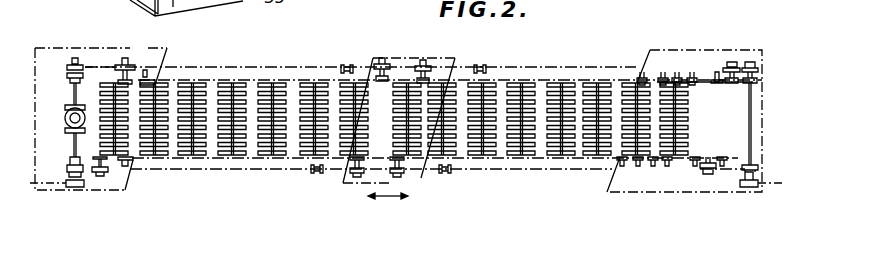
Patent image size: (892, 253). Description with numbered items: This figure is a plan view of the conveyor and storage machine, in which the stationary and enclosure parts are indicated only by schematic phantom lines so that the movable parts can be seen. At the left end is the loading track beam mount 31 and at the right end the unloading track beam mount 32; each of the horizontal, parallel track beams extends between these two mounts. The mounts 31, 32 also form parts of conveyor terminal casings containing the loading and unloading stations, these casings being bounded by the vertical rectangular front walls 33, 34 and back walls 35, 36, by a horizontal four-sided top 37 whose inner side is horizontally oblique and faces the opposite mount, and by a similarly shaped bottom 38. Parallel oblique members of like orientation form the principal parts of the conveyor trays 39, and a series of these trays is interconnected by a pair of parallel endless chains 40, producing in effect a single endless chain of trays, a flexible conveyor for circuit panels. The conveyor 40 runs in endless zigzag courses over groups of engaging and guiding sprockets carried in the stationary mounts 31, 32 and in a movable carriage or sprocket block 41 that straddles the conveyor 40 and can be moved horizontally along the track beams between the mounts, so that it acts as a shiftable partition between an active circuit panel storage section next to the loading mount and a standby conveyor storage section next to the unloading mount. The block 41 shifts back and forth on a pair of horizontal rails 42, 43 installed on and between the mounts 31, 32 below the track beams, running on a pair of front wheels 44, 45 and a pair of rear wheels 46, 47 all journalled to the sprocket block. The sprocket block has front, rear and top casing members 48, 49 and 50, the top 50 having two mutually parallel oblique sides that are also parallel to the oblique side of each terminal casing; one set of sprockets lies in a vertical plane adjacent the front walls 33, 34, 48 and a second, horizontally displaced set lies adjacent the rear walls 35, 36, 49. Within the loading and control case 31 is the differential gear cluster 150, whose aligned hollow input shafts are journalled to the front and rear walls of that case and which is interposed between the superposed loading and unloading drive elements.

The loading track beam mount 31 is at (98, 48).
The unloading track beam mount 32 is at (745, 45).
The front wall 33 is at (105, 192).
The front wall 34 is at (705, 192).
The back wall 35 is at (142, 48).
The back wall 36 is at (705, 50).
The top 37 is at (88, 182).
The bottom 38 is at (702, 66).
The conveyor trays 39 is at (228, 140).
The endless chains 40 is at (540, 80).
The sprocket block 41 is at (345, 186).
The horizontal rail 42 is at (157, 170).
The horizontal rail 43 is at (298, 66).
The front wheel 44 is at (313, 176).
The front wheel 45 is at (443, 175).
The rear wheel 46 is at (345, 65).
The rear wheel 47 is at (478, 65).
The front casing member 48 is at (360, 185).
The rear casing member 49 is at (397, 57).
The top casing member 50 is at (400, 78).
The differential gear cluster 150 is at (72, 112).